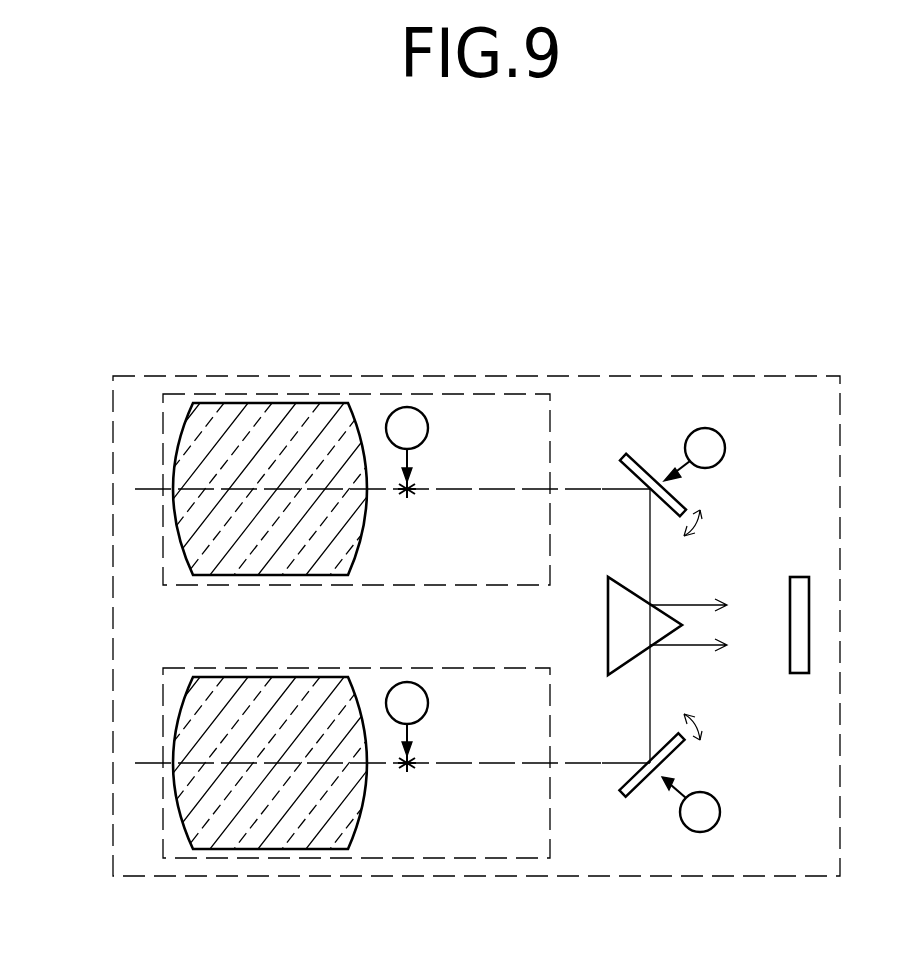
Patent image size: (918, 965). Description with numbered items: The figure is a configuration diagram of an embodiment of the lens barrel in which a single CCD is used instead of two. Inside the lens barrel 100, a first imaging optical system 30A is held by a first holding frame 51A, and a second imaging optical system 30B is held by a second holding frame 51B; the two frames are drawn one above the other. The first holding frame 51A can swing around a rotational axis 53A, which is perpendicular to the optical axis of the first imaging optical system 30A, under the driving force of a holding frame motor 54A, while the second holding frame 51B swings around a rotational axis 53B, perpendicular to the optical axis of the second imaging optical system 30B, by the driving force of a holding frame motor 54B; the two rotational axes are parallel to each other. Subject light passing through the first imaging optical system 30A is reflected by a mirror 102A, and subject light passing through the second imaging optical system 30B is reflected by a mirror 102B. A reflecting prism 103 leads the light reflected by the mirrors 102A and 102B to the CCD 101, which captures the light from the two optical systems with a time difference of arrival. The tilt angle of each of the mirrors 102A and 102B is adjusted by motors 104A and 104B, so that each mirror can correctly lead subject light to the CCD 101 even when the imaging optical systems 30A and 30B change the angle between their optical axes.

The lens barrel 100 is at (658, 376).
The CCD 101 is at (800, 674).
The mirror 102A is at (640, 456).
The mirror 102B is at (640, 797).
The reflecting prism 103 is at (608, 622).
The motor 104A is at (726, 448).
The motor 104B is at (721, 810).
The first imaging optical system 30A is at (186, 452).
The second imaging optical system 30B is at (184, 726).
The first holding frame 51A is at (381, 394).
The second holding frame 51B is at (382, 858).
The rotational axis 53A is at (406, 500).
The rotational axis 53B is at (406, 774).
The holding frame motor 54A is at (428, 425).
The holding frame motor 54B is at (428, 700).